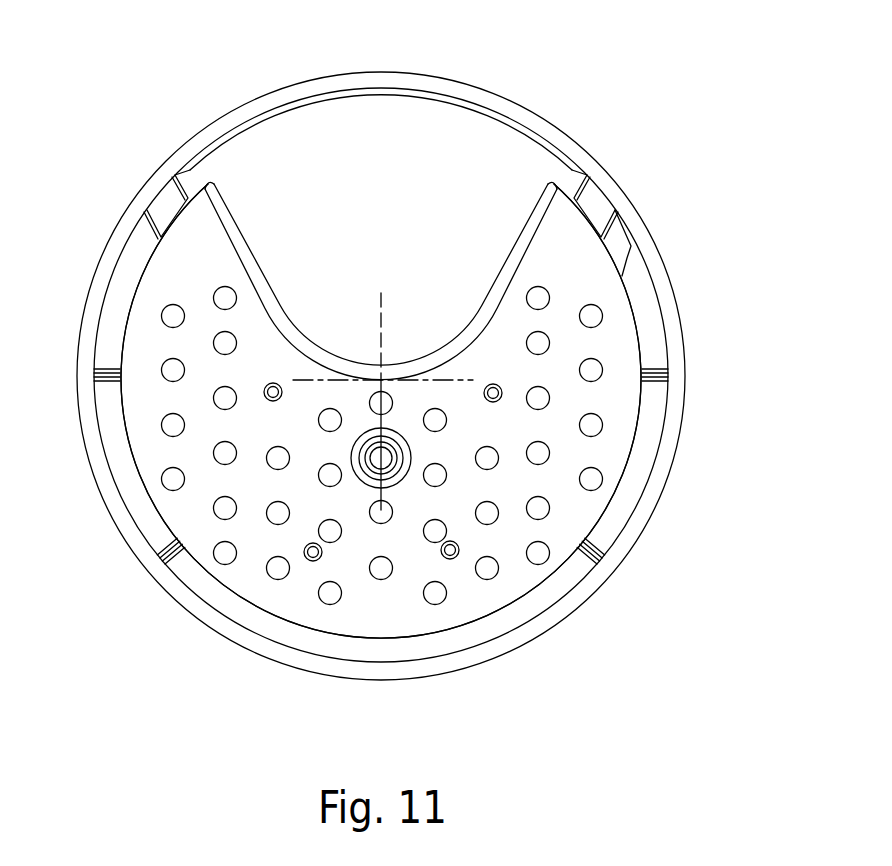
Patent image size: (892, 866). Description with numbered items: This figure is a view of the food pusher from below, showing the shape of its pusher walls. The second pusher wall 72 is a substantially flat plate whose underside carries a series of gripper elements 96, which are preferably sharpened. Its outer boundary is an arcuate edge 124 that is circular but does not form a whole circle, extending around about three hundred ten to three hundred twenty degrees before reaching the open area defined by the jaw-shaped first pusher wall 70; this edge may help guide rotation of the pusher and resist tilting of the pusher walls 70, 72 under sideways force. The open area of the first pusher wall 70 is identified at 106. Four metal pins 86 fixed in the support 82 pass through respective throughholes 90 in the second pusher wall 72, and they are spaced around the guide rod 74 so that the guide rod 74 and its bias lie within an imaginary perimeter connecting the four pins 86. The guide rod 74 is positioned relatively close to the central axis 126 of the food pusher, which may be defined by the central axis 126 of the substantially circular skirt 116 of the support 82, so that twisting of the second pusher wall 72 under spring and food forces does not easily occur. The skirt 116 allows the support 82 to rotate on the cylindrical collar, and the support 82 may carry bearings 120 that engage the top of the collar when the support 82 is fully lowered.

The first pusher wall 70 is at (517, 250).
The second pusher wall 72 is at (612, 400).
The guide rod 74 is at (366, 486).
The support 82 is at (648, 516).
The metal pins 86 is at (453, 560).
The throughholes 90 is at (458, 553).
The gripper elements 96 is at (592, 316).
The pocket 106 is at (377, 272).
The skirt 116 is at (413, 662).
The bearings 120 is at (668, 372).
The arcuate edge 124 is at (252, 600).
The central axis 126 is at (382, 380).